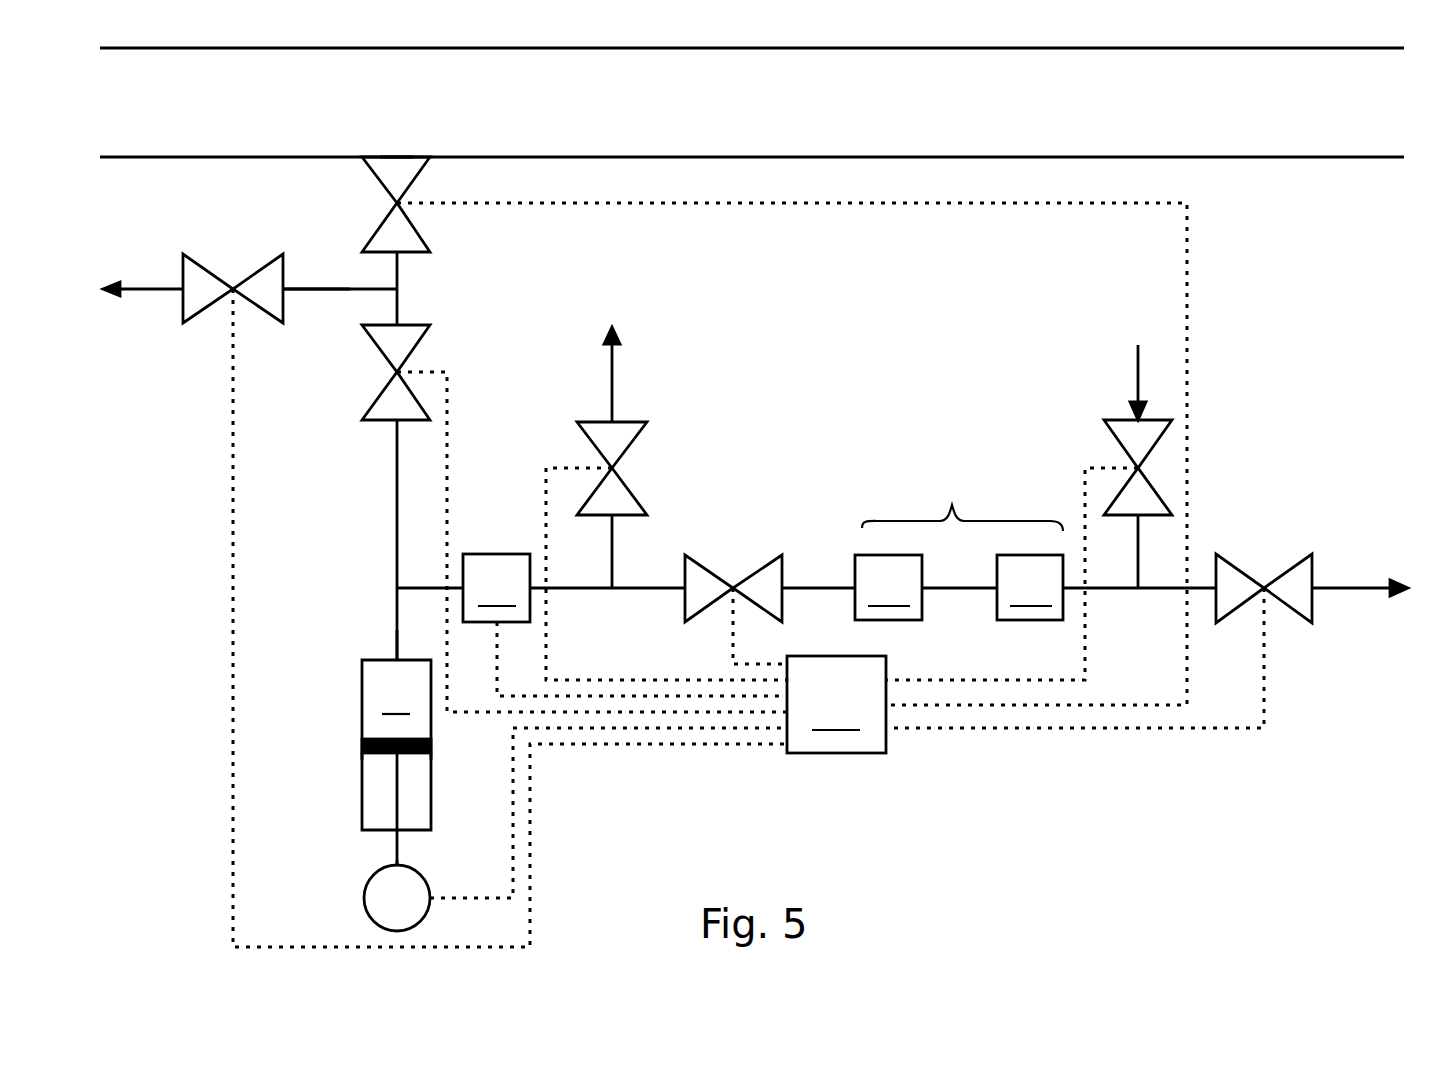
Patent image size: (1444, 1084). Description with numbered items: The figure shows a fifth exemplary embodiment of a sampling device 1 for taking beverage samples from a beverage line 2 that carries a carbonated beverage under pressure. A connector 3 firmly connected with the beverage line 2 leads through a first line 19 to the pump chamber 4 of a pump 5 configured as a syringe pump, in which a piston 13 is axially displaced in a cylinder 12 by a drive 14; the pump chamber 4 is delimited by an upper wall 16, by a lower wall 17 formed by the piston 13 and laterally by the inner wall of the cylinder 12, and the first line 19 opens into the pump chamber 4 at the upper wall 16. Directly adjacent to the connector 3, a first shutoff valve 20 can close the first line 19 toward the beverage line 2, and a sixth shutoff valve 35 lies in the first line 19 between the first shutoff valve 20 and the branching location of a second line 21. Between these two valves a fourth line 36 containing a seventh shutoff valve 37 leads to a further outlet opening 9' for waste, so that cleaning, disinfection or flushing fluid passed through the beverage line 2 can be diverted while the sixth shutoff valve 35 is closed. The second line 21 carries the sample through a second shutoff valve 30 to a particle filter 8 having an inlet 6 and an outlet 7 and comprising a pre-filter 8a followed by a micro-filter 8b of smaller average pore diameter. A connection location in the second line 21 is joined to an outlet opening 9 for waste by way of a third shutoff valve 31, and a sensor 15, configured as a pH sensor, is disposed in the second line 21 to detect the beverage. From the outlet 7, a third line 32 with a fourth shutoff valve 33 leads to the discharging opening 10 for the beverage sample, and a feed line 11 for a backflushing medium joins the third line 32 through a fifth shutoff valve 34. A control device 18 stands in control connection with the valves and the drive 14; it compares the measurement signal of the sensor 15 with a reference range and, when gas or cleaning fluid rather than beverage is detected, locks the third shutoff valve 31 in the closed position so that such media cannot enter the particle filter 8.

The sampling device 1 is at (1250, 834).
The beverage line 2 is at (760, 130).
The connector 3 is at (398, 157).
The pump chamber 4 is at (396, 710).
The pump 5 is at (310, 618).
The inlet 6 is at (853, 578).
The outlet 7 is at (1068, 592).
The particle filter 8 is at (962, 522).
The pre-filter 8a is at (888, 587).
The micro-filter 8b is at (1030, 587).
The outlet opening 9 is at (642, 361).
The further outlet opening 9' is at (142, 338).
The discharging opening 10 is at (1410, 605).
The feed line 11 is at (1136, 373).
The cylinder 12 is at (362, 806).
The piston 13 is at (362, 752).
The drive 14 is at (364, 894).
The sensor 15 is at (472, 588).
The upper wall 16 is at (396, 658).
The lower wall 17 is at (413, 740).
The control device 18 is at (748, 575).
The first line 19 is at (400, 297).
The first shutoff valve 20 is at (366, 209).
The second line 21 is at (586, 592).
The second shutoff valve 30 is at (745, 535).
The third shutoff valve 31 is at (655, 460).
The third line 32 is at (1163, 592).
The fourth shutoff valve 33 is at (1276, 535).
The fifth shutoff valve 34 is at (1078, 436).
The sixth shutoff valve 35 is at (338, 380).
The fourth line 36 is at (318, 292).
The seventh shutoff valve 37 is at (224, 248).